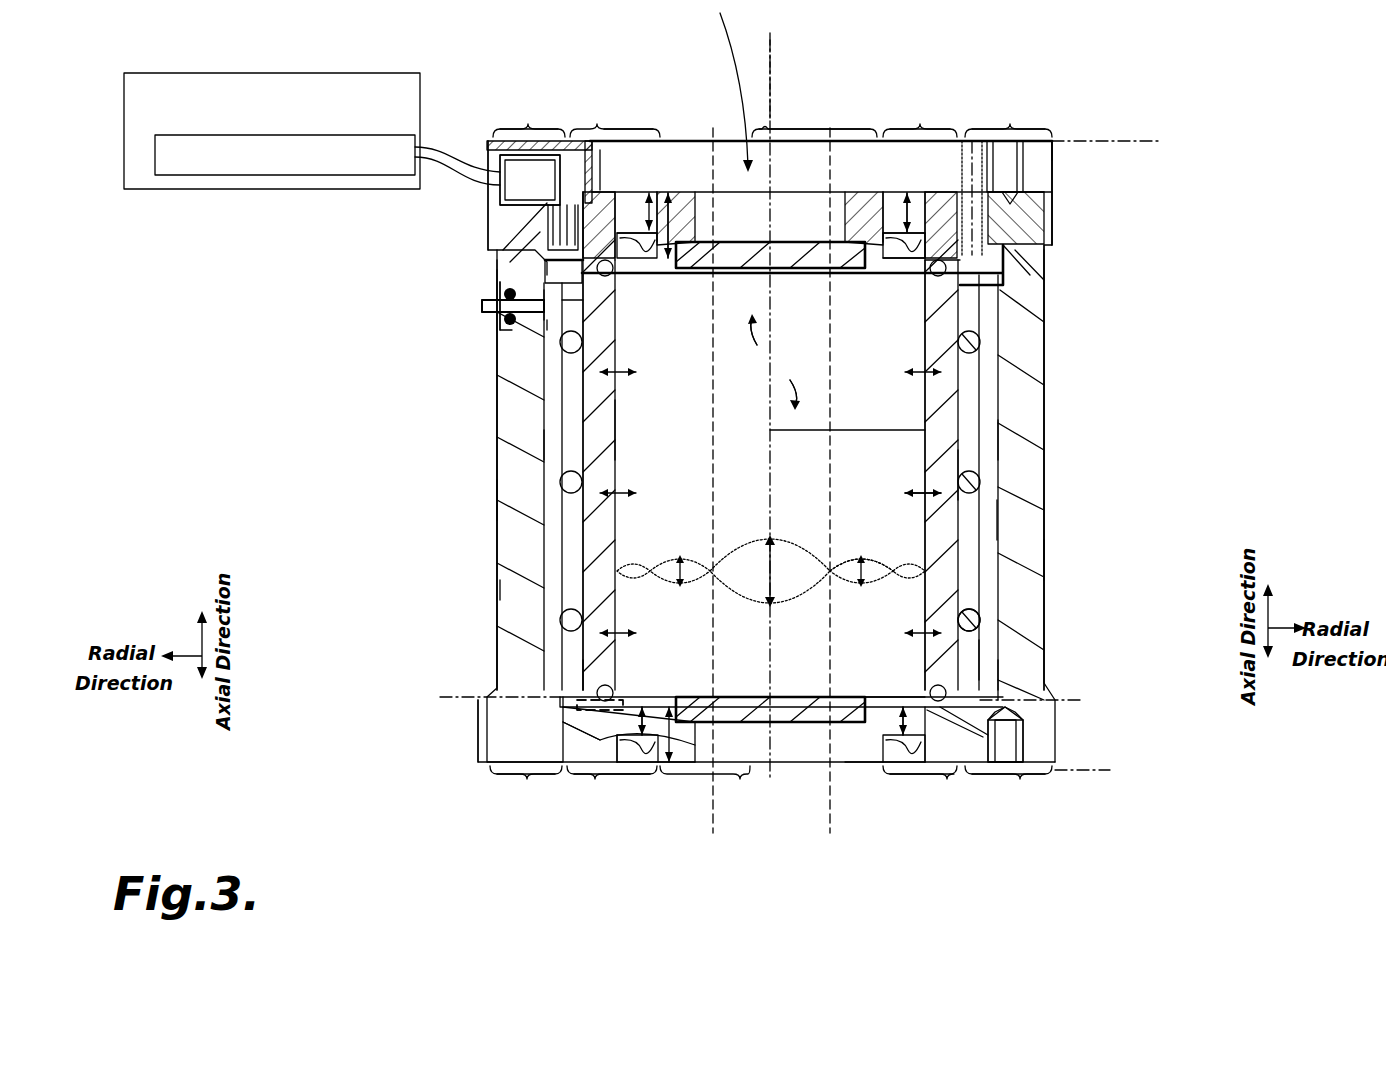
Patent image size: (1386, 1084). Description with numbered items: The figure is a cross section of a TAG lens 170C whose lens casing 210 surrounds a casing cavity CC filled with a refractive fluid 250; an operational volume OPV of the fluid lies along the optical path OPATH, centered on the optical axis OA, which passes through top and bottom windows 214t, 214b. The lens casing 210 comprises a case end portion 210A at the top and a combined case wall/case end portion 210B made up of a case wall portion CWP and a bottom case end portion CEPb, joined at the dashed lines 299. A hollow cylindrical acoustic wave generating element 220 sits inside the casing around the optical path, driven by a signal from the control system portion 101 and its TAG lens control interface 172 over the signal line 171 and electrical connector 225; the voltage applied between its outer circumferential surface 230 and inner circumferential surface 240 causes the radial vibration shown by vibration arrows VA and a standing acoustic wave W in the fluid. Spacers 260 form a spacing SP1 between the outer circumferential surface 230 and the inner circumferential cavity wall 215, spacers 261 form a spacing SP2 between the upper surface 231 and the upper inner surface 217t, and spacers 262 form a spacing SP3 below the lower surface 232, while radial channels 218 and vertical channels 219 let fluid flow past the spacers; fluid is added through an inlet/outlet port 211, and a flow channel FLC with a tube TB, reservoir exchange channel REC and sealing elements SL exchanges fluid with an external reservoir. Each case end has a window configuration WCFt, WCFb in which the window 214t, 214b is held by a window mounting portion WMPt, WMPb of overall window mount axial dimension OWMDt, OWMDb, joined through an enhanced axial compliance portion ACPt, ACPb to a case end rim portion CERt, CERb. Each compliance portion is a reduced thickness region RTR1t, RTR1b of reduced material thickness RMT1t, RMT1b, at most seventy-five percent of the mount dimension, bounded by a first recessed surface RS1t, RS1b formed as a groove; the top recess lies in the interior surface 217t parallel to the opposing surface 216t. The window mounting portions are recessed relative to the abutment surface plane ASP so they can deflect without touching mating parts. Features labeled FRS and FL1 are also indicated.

The control system portion 101 is at (218, 72).
The TAG lens control interface 172 is at (195, 138).
The signal line 171 is at (428, 162).
The TAG lens 170C is at (1255, 102).
The first recessed surface RS1t is at (618, 195).
The reduced thickness region RTR1t is at (612, 235).
The enhanced axial compliance portion ACPt is at (597, 124).
The case end rim portion CERt is at (528, 124).
The optical path OPATH is at (690, 88).
The reduced material thickness RMT1t is at (660, 200).
The overall window mount axial dimension OWMDt is at (670, 195).
The optical axis OA is at (773, 43).
The window mounting portion WMPt is at (757, 127).
The window 214t is at (790, 240).
The window configuration WCFt is at (929, 119).
The abutment surface plane ASP is at (1140, 141).
The inlet/outlet port 211 is at (1030, 205).
The case end portion 210A is at (1065, 205).
The combined case wall/case end portion 210B is at (1065, 262).
The lens casing 210 is at (1078, 150).
The upper inner surface 217t is at (870, 232).
The opposing surface 216t is at (873, 200).
The sealing elements SL is at (527, 191).
The electrical connector 225 is at (497, 200).
The tube TB is at (500, 298).
The flow channel FLC is at (582, 308).
The reservoir exchange channel REC is at (545, 307).
The flexible resonator support FRS is at (555, 320).
The spacers 261 is at (575, 322).
The inner circumferential cavity wall 215 is at (568, 380).
The operational volume OPV is at (772, 362).
The spacing SP2 is at (905, 275).
The spacing SP1 is at (555, 445).
The inner circumferential surface 240 is at (618, 432).
The upper surface 231 is at (940, 270).
The controllable acoustic wave generating element 220 is at (950, 390).
The refractive fluid 250 is at (935, 415).
The casing cavity CC is at (892, 438).
The vertical channels 219 is at (1000, 515).
The standing acoustic wave W is at (880, 563).
The outer circumferential surface 230 is at (945, 585).
The spacers 260 is at (958, 615).
The spacers 262 is at (950, 670).
The lower surface 232 is at (958, 705).
The radial channels 218 is at (975, 700).
The dashed lines 299 is at (1062, 700).
The case wall portion CWP is at (473, 250).
The bottom case end portion CEPb is at (470, 740).
The vibration arrows VA is at (910, 493).
The flexure FL1 is at (628, 700).
The spacing SP3 is at (888, 697).
The first recessed surface RS1b is at (1005, 712).
The case end rim portion CERb is at (527, 782).
The enhanced axial compliance portion ACPb is at (595, 782).
The reduced thickness region RTR1b is at (645, 740).
The overall window mount axial dimension OWMDb is at (660, 740).
The reduced material thickness RMT1b is at (645, 740).
The window 214b is at (748, 735).
The window mounting portion WMPb is at (802, 765).
The window configuration WCFb is at (882, 819).